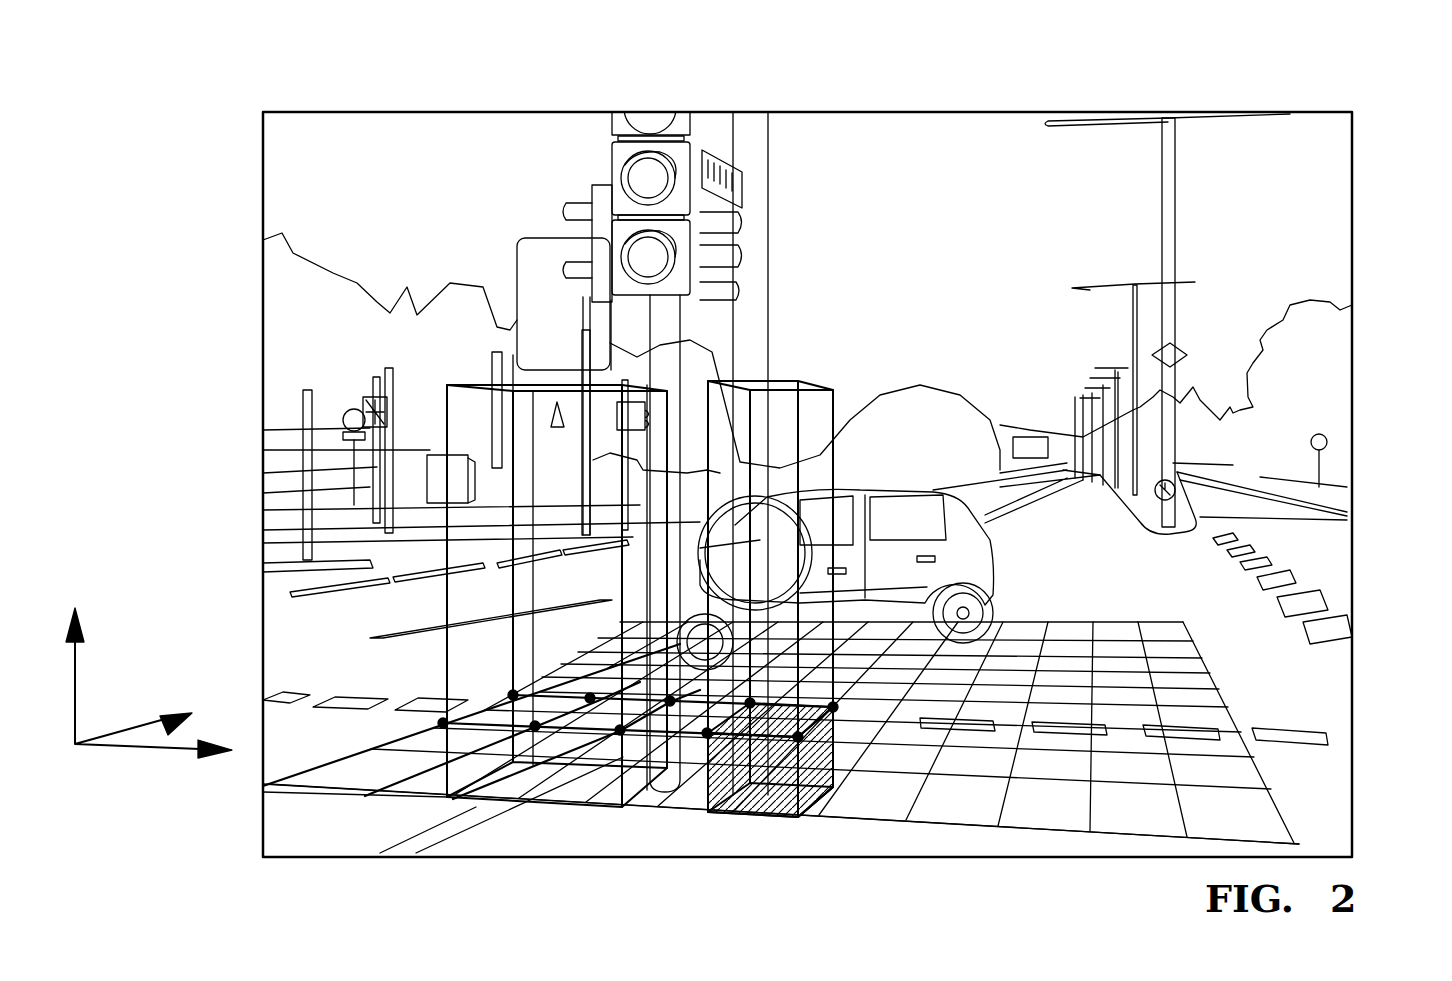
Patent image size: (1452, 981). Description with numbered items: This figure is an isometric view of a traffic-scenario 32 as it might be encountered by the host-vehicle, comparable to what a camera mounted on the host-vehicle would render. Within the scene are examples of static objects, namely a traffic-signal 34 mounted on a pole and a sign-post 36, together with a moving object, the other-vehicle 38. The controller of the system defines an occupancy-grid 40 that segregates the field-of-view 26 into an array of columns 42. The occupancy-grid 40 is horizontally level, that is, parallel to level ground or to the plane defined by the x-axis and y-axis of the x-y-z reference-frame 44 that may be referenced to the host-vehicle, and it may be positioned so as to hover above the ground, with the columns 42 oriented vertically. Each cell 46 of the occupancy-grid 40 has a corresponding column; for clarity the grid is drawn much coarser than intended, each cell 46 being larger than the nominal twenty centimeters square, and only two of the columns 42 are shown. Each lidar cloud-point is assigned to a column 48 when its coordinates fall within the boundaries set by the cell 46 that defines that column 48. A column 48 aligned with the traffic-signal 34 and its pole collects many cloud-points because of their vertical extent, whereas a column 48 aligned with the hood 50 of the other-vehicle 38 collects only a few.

The traffic-scenario 32 is at (1287, 80).
The traffic-signal 34 is at (620, 153).
The sign-post 36 is at (755, 170).
The other-vehicle 38 is at (885, 492).
The field-of-view 26 is at (1122, 678).
The occupancy-grid 40 is at (1228, 718).
The columns 42 is at (410, 812).
The reference-frame 44 is at (118, 765).
The cell 46 is at (732, 808).
The column 48 is at (828, 793).
The hood 50 is at (628, 580).